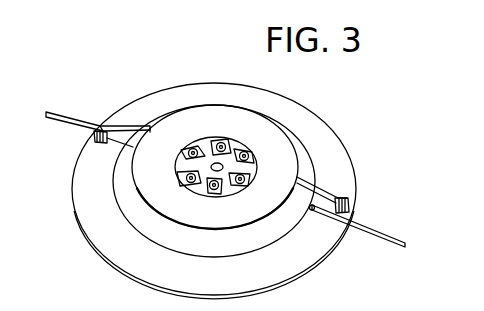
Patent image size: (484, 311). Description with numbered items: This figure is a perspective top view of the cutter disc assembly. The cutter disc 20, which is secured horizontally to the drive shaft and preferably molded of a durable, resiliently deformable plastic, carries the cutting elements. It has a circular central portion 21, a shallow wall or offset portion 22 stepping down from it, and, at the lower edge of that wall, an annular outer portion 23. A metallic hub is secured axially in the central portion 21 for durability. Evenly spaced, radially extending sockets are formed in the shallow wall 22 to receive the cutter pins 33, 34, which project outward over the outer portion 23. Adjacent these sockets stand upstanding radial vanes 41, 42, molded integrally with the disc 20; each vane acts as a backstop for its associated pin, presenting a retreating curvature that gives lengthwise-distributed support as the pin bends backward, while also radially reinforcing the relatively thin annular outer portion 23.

The cutter disc 20 is at (192, 78).
The circular central portion 21 is at (264, 127).
The shallow wall 22 is at (307, 167).
The annular outer portion 23 is at (342, 182).
The cutter pin 33 is at (372, 235).
The cutter pin 34 is at (62, 122).
The radial vane 41 is at (350, 204).
The radial vane 42 is at (122, 127).